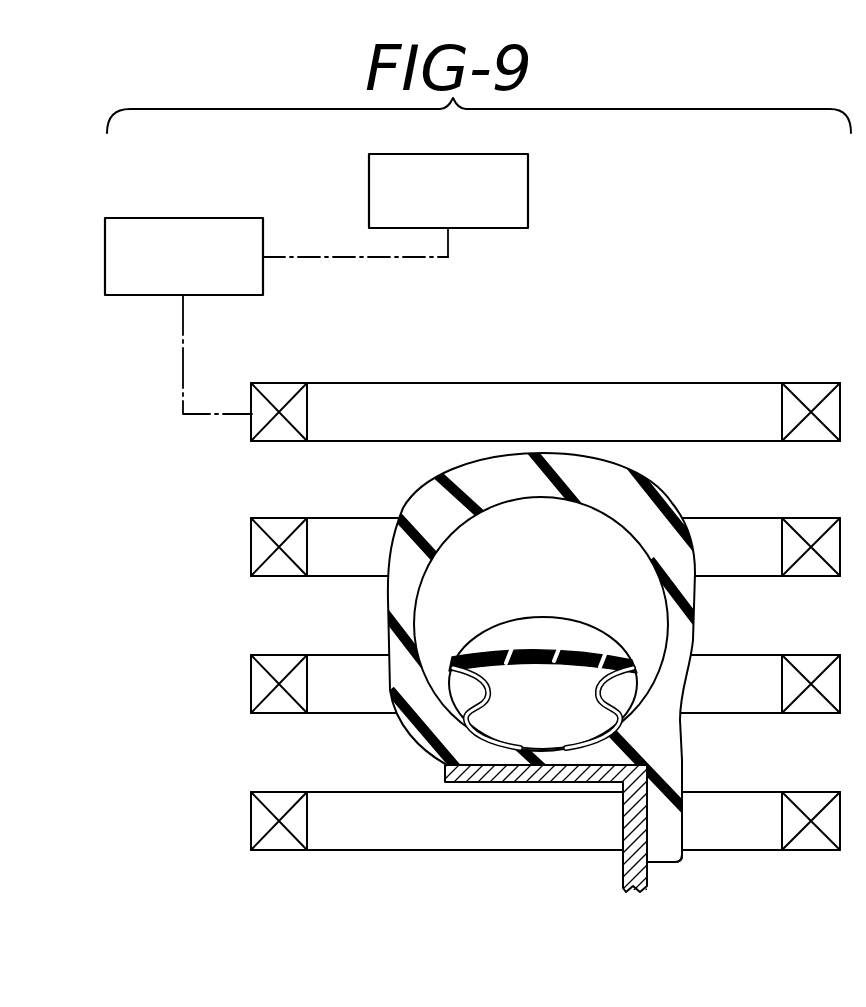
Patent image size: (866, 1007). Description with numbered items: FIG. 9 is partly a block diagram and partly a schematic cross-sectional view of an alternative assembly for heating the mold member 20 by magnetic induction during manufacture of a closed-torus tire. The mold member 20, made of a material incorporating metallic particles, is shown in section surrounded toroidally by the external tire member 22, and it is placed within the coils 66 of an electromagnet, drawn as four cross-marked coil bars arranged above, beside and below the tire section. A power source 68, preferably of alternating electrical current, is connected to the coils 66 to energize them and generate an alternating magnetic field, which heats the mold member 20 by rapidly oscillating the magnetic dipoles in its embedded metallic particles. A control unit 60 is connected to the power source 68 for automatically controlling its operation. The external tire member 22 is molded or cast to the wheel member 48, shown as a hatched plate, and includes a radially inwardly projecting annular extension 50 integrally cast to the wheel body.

The mold member 20 is at (605, 635).
The external tire member 22 is at (400, 510).
The wheel member 48 is at (623, 812).
The annular extension 50 is at (668, 824).
The control unit 60 is at (528, 210).
The coils 66 is at (251, 680).
The power source 68 is at (228, 218).